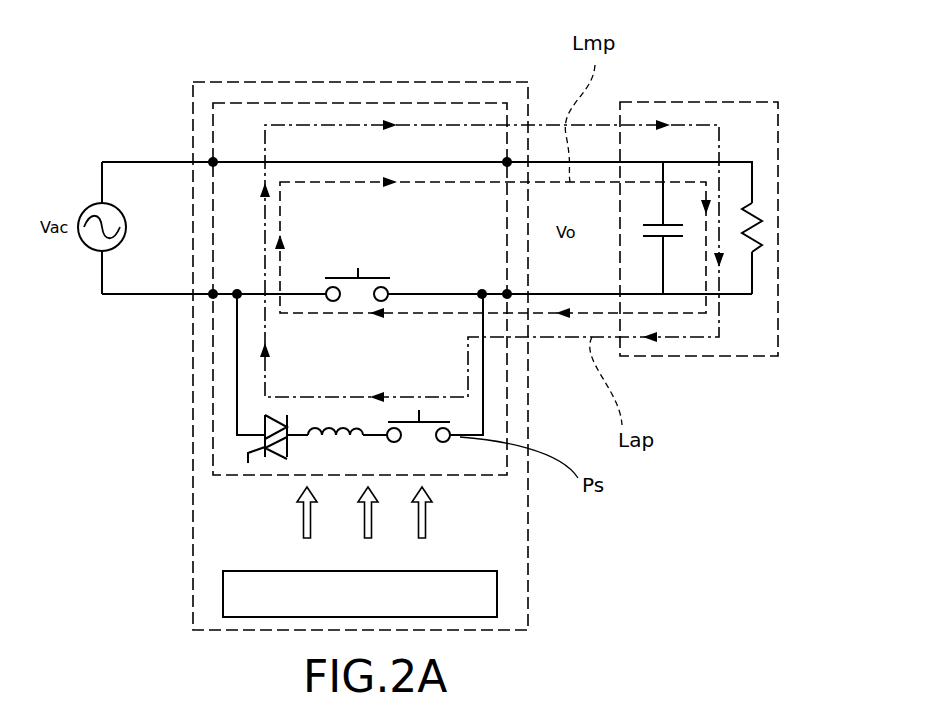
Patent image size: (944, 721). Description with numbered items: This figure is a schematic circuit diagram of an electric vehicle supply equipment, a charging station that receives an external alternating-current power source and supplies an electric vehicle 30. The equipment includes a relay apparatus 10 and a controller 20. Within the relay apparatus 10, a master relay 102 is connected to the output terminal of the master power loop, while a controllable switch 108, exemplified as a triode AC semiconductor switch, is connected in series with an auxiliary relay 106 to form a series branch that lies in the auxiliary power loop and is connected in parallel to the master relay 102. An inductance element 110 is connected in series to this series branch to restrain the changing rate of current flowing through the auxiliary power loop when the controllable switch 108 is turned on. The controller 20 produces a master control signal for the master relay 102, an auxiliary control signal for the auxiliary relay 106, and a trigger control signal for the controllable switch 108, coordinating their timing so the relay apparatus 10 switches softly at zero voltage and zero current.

The relay apparatus 10 is at (455, 110).
The electric vehicle 30 is at (745, 110).
The controller 20 is at (487, 596).
The master relay 102 is at (372, 272).
The auxiliary relay 106 is at (422, 442).
The controllable switch 108 is at (263, 423).
The inductance element 110 is at (337, 425).